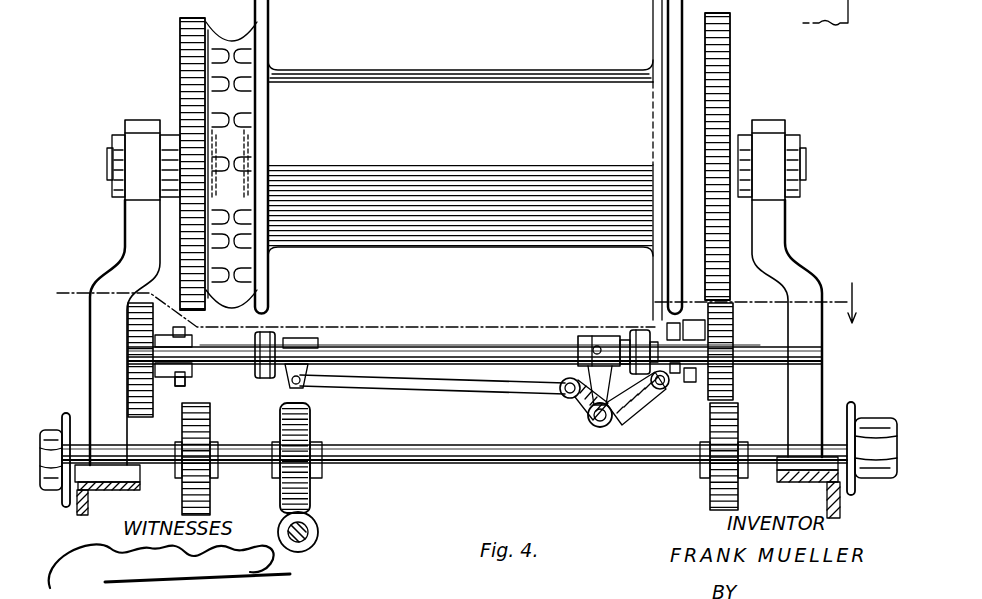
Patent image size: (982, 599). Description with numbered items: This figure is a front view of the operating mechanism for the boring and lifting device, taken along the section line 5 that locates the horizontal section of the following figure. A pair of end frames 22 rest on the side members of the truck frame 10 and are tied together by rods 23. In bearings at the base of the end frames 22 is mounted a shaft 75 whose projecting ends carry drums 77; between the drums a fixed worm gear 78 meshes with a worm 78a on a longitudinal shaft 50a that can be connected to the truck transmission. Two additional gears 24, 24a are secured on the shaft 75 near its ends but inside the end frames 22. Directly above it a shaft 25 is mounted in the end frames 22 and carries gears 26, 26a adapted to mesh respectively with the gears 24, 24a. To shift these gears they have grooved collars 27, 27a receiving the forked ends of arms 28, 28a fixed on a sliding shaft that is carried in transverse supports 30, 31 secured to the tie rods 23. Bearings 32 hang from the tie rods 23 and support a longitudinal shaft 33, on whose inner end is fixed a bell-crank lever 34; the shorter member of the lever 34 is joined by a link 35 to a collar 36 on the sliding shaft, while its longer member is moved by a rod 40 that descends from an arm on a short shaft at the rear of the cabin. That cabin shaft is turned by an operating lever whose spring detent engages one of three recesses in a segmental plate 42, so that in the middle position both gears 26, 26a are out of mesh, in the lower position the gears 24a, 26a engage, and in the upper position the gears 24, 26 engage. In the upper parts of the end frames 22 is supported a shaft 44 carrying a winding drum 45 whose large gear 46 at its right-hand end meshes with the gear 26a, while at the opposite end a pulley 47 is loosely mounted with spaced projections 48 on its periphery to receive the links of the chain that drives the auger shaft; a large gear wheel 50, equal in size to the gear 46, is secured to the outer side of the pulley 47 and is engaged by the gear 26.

The section line 5— 5 is at (462, 298).
The frame 10 is at (88, 515).
The end frames 22 is at (135, 240).
The rods 23 is at (380, 353).
The gear 24 is at (210, 493).
The gear 24a is at (713, 478).
The shaft 25 is at (227, 340).
The gear 26 is at (133, 393).
The gear 26a is at (733, 388).
The grooved collar 27 is at (168, 385).
The grooved collar 27a is at (707, 333).
The arm 28 is at (185, 384).
The arm 28a is at (688, 380).
The transverse support 30 is at (265, 379).
The transverse support 31 is at (640, 332).
The bearings 32 is at (590, 338).
The longitudinal shaft 33 is at (600, 422).
The bell-crank lever 34 is at (615, 418).
The link 35 is at (463, 391).
The collar 36 is at (300, 342).
The rod 40 is at (655, 22).
The segmental plate 42 is at (851, 0).
The shaft 44 is at (107, 165).
The winding drum 45 is at (460, 158).
The large gear 46 is at (732, 65).
The pulley 47 is at (228, 42).
The spaced projections 48 is at (244, 82).
The large gear wheel 50 is at (180, 78).
The longitudinal shaft 50a is at (303, 540).
The shaft 75 is at (487, 463).
The drums 77 is at (55, 430).
The worm gear 78 is at (317, 413).
The worm 78a is at (320, 527).